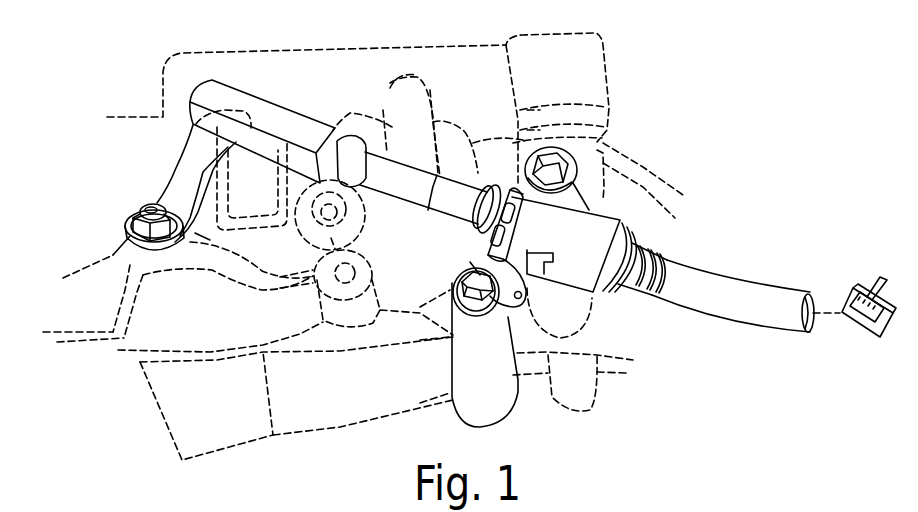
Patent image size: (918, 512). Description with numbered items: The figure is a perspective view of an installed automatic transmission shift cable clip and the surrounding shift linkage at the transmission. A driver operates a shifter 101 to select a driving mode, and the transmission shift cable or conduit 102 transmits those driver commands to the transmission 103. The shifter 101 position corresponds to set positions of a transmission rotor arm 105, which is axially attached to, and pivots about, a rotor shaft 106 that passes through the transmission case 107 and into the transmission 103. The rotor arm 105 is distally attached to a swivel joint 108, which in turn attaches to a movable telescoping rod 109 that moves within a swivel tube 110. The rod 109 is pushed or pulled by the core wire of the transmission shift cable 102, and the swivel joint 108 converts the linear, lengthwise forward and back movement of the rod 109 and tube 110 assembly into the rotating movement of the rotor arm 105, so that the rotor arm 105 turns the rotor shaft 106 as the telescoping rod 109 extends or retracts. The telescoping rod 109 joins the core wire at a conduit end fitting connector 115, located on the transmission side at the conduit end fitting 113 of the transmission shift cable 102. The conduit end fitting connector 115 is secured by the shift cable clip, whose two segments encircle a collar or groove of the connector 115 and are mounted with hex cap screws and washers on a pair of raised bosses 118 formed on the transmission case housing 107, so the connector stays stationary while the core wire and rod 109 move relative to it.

The shifter 101 is at (857, 280).
The transmission shift cable 102 is at (725, 293).
The transmission 103 is at (125, 260).
The transmission rotor arm 105 is at (191, 158).
The rotor shaft 106 is at (147, 208).
The transmission case 107 is at (264, 326).
The swivel joint 108 is at (234, 110).
The telescoping rod 109 is at (408, 183).
The swivel tube 110 is at (290, 123).
The conduit end fitting 113 is at (593, 233).
The conduit end fitting connector 115 is at (506, 187).
The boss 118 is at (473, 373).